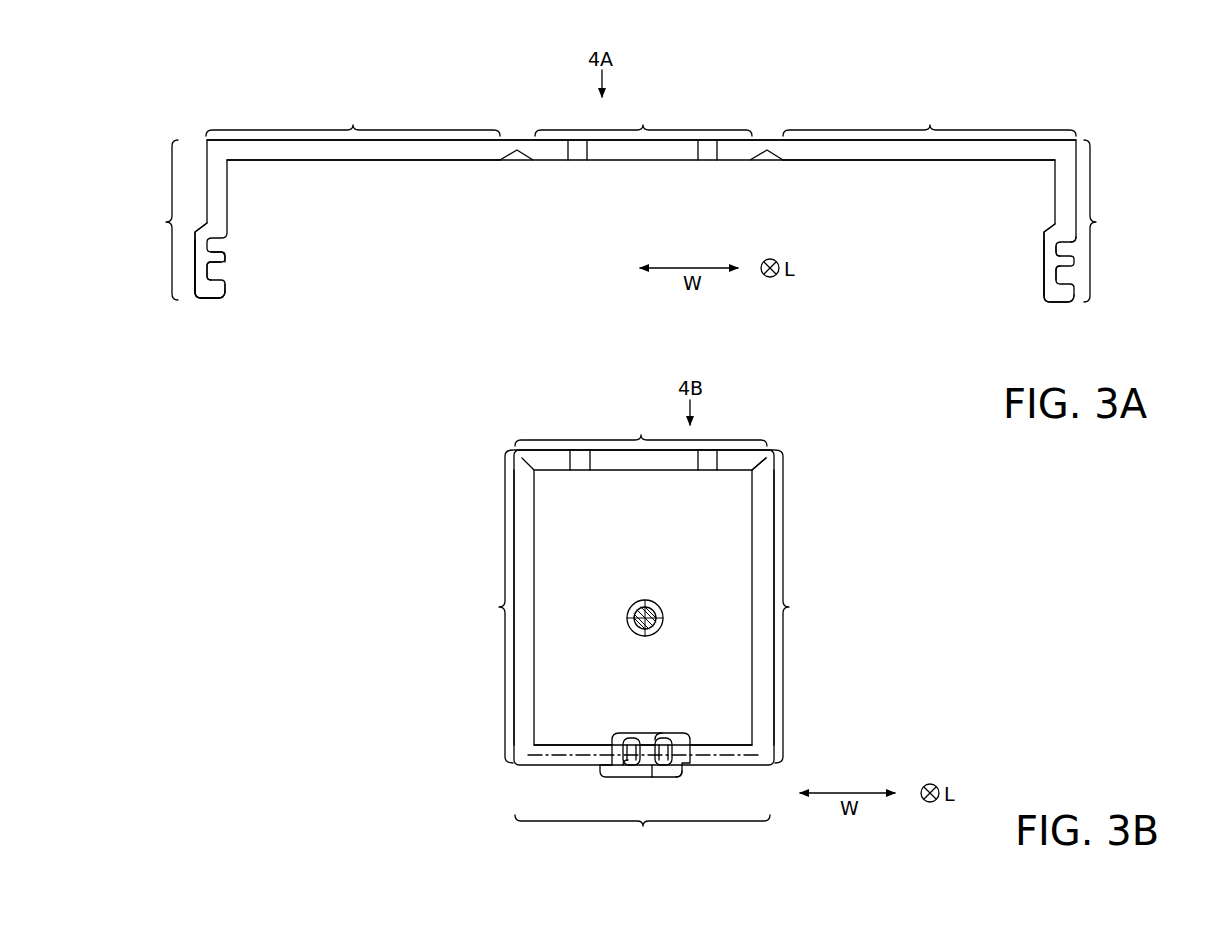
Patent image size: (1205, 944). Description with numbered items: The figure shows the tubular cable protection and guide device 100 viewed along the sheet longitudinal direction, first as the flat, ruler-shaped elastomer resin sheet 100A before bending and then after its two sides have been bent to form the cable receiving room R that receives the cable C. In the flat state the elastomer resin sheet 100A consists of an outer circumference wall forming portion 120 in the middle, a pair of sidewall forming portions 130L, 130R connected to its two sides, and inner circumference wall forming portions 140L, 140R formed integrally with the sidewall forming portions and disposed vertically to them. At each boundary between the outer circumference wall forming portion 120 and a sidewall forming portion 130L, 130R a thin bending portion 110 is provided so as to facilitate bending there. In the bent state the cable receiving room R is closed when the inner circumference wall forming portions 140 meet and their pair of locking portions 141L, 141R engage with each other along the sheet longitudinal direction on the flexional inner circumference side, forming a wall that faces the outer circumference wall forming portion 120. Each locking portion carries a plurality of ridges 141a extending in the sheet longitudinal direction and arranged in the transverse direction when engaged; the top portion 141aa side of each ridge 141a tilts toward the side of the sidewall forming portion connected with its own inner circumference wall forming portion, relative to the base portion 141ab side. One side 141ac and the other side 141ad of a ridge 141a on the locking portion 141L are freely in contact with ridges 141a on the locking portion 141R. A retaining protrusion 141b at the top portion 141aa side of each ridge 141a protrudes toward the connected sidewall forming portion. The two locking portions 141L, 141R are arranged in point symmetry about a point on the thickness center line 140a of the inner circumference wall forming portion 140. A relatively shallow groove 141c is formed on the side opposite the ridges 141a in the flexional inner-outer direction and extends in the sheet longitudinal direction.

In FIG. 3A, the tubular cable protection and guide device 100 is at (228, 103).
In FIG. 3B, the tubular cable protection and guide device 100 is at (438, 470).
In FIG. 3A, the elastomer resin sheet 100A is at (178, 66).
In FIG. 3B, the elastomer resin sheet 100A is at (388, 437).
In FIG. 3A, the bending portion 110 is at (517, 148).
In FIG. 3B, the bending portion 110 is at (773, 452).
In FIG. 3A, the outer circumference wall forming portion 120 is at (643, 131).
In FIG. 3B, the outer circumference wall forming portion 120 is at (641, 440).
In FIG. 3A, the sidewall forming portion 130L is at (353, 131).
In FIG. 3B, the sidewall forming portion 130L is at (483, 606).
In FIG. 3A, the sidewall forming portion 130R is at (929, 131).
In FIG. 3B, the sidewall forming portion 130R is at (808, 606).
In FIG. 3B, the inner circumference wall forming portion 140 is at (642, 793).
In FIG. 3B, the thickness center line 140a is at (513, 768).
In FIG. 3A, the inner circumference wall forming portion 140L is at (163, 220).
In FIG. 3B, the inner circumference wall forming portion 140L is at (553, 750).
In FIG. 3A, the inner circumference wall forming portion 140R is at (1098, 221).
In FIG. 3B, the inner circumference wall forming portion 140R is at (732, 750).
In FIG. 3A, the ridge 141a is at (230, 257).
In FIG. 3A, the top portion 141aa is at (228, 300).
In FIG. 3B, the top portion 141aa is at (665, 735).
In FIG. 3A, the base portion 141ab is at (212, 300).
In FIG. 3B, the base portion 141ab is at (684, 772).
In FIG. 3A, the one side of ridge 141ac is at (1057, 256).
In FIG. 3B, the one side of ridge 141ac is at (626, 770).
In FIG. 3A, the other side of ridge 141ad is at (1057, 276).
In FIG. 3B, the other side of ridge 141ad is at (652, 778).
In FIG. 3A, the retaining protrusion 141b is at (232, 272).
In FIG. 3B, the retaining protrusion 141b is at (663, 742).
In FIG. 3A, the groove 141c is at (195, 300).
In FIG. 3A, the locking portion 141L is at (240, 288).
In FIG. 3B, the locking portion 141L is at (676, 786).
In FIG. 3A, the locking portion 141R is at (1038, 296).
In FIG. 3B, the locking portion 141R is at (622, 718).
In FIG. 3B, the cable C is at (648, 604).
In FIG. 3B, the cable receiving room R is at (685, 540).